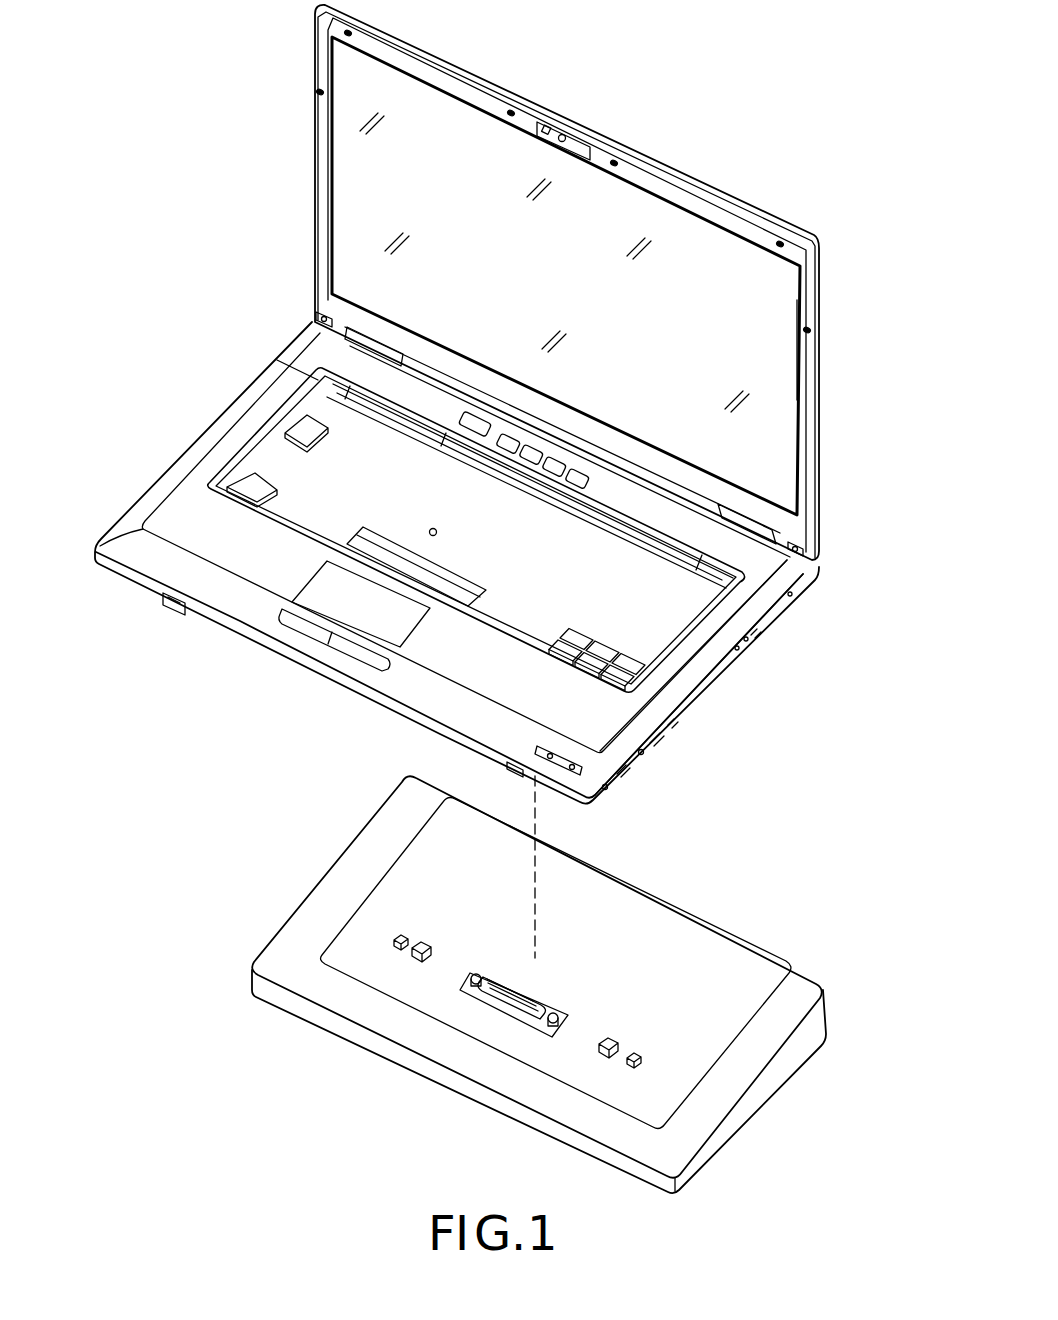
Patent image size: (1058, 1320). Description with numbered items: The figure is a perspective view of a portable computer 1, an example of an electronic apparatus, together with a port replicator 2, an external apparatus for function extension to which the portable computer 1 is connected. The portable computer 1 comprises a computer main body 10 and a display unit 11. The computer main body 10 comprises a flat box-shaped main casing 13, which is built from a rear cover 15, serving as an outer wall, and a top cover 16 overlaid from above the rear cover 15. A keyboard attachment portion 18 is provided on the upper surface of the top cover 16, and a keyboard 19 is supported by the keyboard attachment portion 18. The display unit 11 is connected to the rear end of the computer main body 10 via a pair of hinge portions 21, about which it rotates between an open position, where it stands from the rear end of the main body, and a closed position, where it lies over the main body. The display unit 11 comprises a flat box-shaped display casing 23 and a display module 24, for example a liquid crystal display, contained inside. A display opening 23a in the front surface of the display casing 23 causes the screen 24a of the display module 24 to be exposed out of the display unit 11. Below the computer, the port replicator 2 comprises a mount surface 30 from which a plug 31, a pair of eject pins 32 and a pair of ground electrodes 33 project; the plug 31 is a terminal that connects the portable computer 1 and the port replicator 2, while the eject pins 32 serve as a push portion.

The portable computer 1 is at (207, 122).
The port replicator 2 is at (262, 888).
The computer main body 10 is at (167, 452).
The display unit 11 is at (723, 185).
The main casing 13 is at (134, 508).
The rear cover 15 is at (648, 752).
The top cover 16 is at (670, 697).
The keyboard attachment portion 18 is at (272, 459).
The keyboard 19 is at (296, 425).
The hinge portions 21 is at (321, 318).
The display casing 23 is at (808, 300).
The display opening 23a is at (797, 350).
The display module 24 is at (455, 122).
The screen 24a is at (411, 128).
The mount surface 30 is at (697, 935).
The plug 31 is at (537, 990).
The eject pins 32 is at (425, 944).
The ground electrodes 33 is at (400, 934).